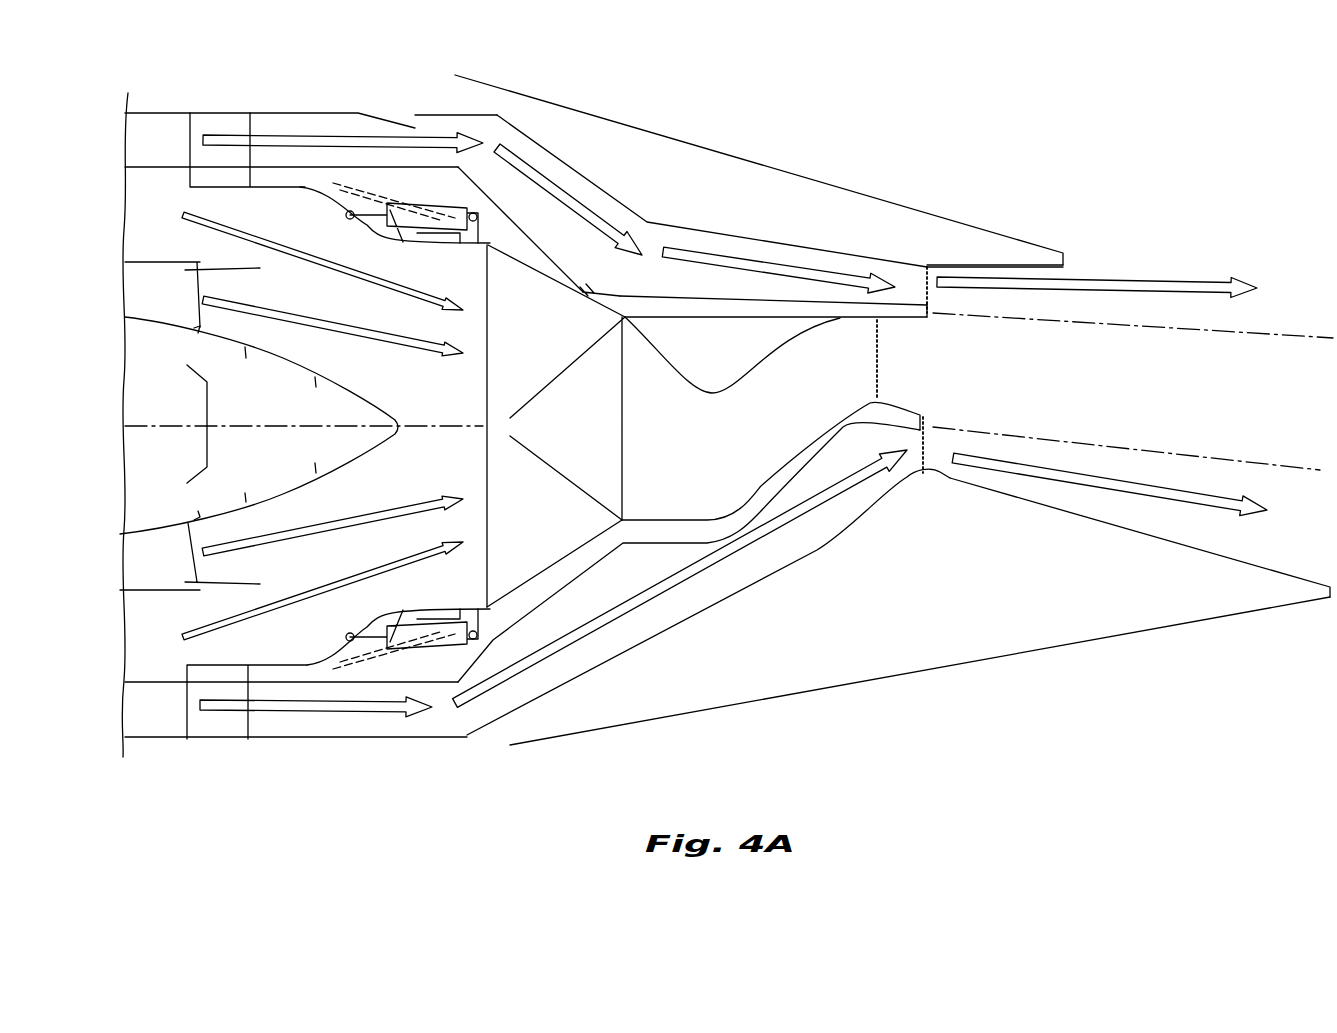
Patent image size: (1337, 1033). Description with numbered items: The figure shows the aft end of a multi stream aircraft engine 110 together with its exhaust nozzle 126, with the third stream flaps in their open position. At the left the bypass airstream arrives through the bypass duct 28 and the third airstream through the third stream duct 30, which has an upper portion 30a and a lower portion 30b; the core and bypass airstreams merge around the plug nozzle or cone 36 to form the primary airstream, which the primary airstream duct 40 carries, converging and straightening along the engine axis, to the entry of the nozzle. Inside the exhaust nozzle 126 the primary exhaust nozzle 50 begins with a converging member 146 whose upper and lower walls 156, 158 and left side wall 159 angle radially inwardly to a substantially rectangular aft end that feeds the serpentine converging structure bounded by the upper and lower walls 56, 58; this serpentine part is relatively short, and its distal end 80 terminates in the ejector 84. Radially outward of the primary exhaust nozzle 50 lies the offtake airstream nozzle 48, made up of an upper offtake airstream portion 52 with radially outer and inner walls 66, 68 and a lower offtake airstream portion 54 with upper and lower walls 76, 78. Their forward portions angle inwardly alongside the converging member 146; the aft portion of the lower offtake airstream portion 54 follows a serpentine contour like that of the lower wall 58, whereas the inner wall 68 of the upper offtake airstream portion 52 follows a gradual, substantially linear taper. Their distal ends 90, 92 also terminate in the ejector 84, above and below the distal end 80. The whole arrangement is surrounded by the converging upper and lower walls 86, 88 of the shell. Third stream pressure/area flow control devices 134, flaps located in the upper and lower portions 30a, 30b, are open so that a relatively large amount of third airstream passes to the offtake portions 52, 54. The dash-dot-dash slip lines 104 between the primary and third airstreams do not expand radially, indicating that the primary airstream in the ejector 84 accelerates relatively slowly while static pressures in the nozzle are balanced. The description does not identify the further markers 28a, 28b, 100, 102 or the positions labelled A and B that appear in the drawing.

The bypass duct 28 is at (316, 419).
The upper core engine wall 28a is at (203, 200).
The lower core engine wall 28b is at (217, 647).
The third stream duct 30 is at (310, 128).
The upper portion of the third stream duct 30a is at (272, 128).
The lower portion of the third stream duct 30b is at (287, 717).
The plug nozzle or cone 36 is at (330, 380).
The primary airstream duct 40 is at (291, 426).
The offtake airstream nozzle 48 is at (603, 445).
The primary airstream nozzle 50 is at (707, 426).
The upper offtake airstream portion 52 is at (550, 218).
The lower offtake airstream portion 54 is at (594, 589).
The upper wall of the primary airstream nozzle 56 is at (733, 377).
The lower wall of the primary airstream nozzle 58 is at (800, 460).
The radially outer wall of the upper offtake airstream portion 66 is at (697, 230).
The radially inner wall of the upper offtake airstream portion 68 is at (753, 300).
The upper wall of the lower offtake airstream portion 76 is at (660, 543).
The lower wall of the lower offtake airstream portion 78 is at (730, 597).
The distal end of the primary airstream nozzle 80 is at (884, 357).
The ejector 84 is at (1102, 396).
The upper wall of the shell 86 is at (840, 185).
The lower wall of the shell 88 is at (687, 717).
The distal end of the upper offtake airstream portion 90 is at (957, 273).
The distal end of the lower offtake airstream portion 92 is at (923, 457).
The upper trailing edge 100 is at (933, 318).
The lower trailing edge 102 is at (927, 417).
The slip lines 104 is at (1143, 453).
The multi stream aircraft engine 110 is at (825, 71).
The exhaust nozzle 126 is at (683, 135).
The third stream pressure/area flow control devices 134 is at (392, 114).
The converging member 146 is at (592, 284).
The upper wall of the converging member 156 is at (523, 265).
The lower wall of the converging member 158 is at (540, 570).
The left side wall of the converging member 159 is at (607, 363).
The position A is at (873, 357).
The position B is at (925, 273).